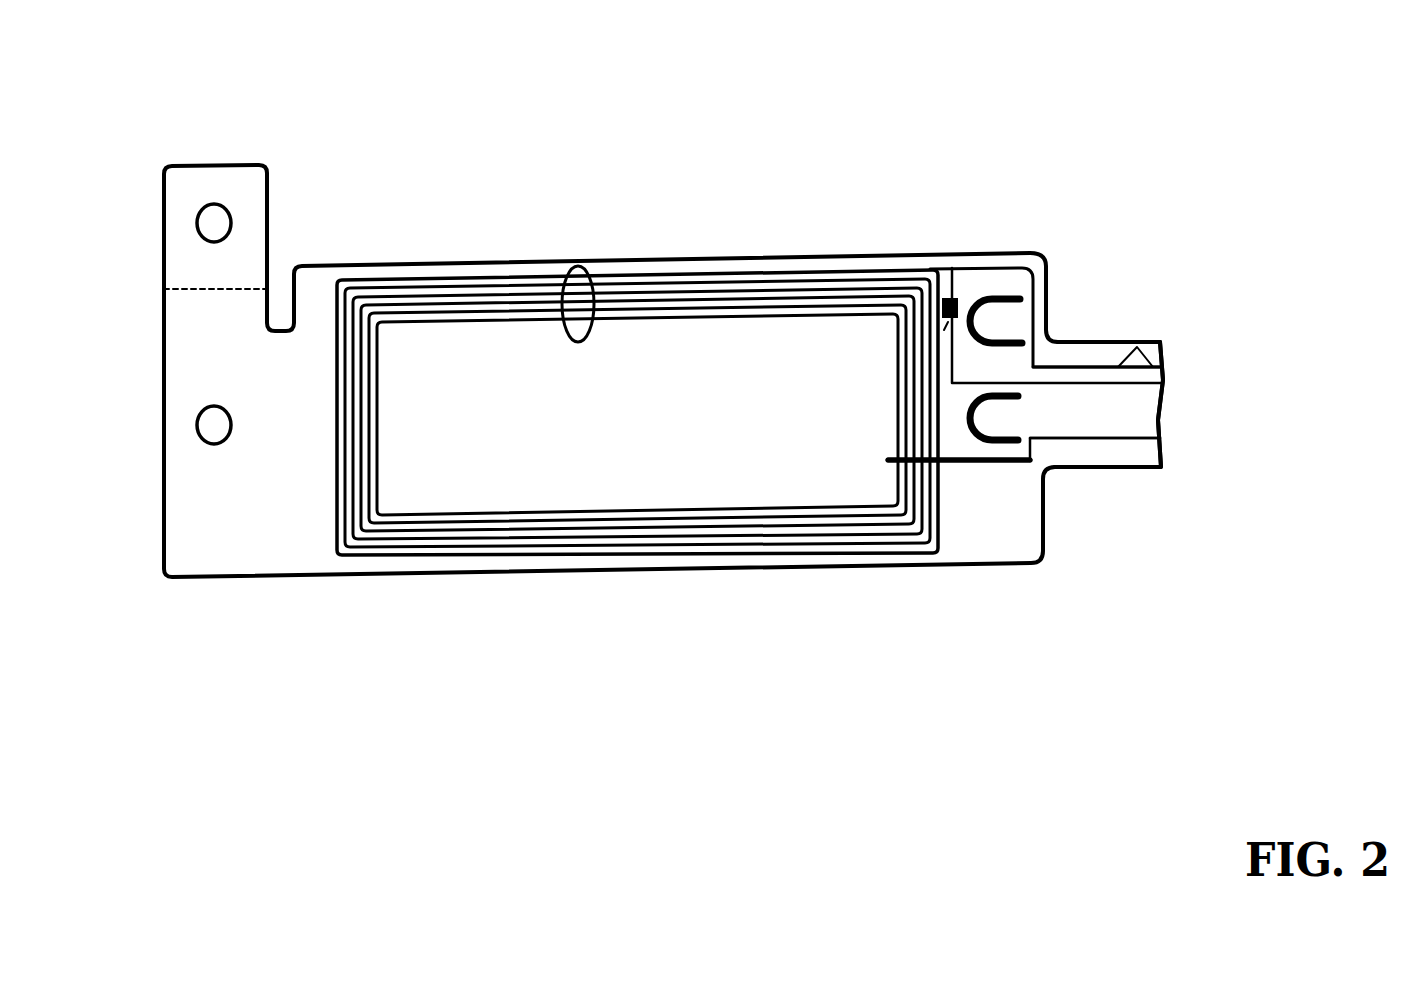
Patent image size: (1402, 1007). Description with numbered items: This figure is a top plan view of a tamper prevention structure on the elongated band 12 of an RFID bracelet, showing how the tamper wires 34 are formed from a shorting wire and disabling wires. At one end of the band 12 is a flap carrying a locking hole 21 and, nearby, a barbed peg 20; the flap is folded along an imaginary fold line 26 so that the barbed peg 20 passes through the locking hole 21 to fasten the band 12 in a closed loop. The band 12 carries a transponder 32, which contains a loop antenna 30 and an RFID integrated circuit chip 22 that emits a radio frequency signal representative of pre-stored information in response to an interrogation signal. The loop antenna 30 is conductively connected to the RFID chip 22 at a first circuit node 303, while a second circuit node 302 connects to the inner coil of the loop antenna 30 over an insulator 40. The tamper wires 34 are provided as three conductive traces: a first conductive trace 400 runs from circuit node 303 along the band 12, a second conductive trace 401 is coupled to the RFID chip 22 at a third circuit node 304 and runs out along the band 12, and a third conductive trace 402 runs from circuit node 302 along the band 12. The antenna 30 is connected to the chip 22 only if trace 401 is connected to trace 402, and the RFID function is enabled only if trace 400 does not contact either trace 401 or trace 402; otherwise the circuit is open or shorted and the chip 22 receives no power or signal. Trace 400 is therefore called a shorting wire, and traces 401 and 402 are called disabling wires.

The elongated band 12 is at (1136, 415).
The barbed peg 20 is at (196, 443).
The locking hole 21 is at (206, 198).
The RFID integrated circuit chip 22 is at (912, 262).
The fold line 26 is at (162, 290).
The loop antenna 30 is at (585, 264).
The transponder 32 is at (367, 764).
The tamper wires 34 is at (1133, 343).
The insulator 40 is at (897, 458).
The second circuit node 302 is at (947, 465).
The first circuit node 303 is at (949, 298).
The third circuit node 304 is at (950, 325).
The first conductive trace 400 is at (1113, 345).
The second conductive trace 401 is at (1065, 365).
The third conductive trace 402 is at (1063, 445).